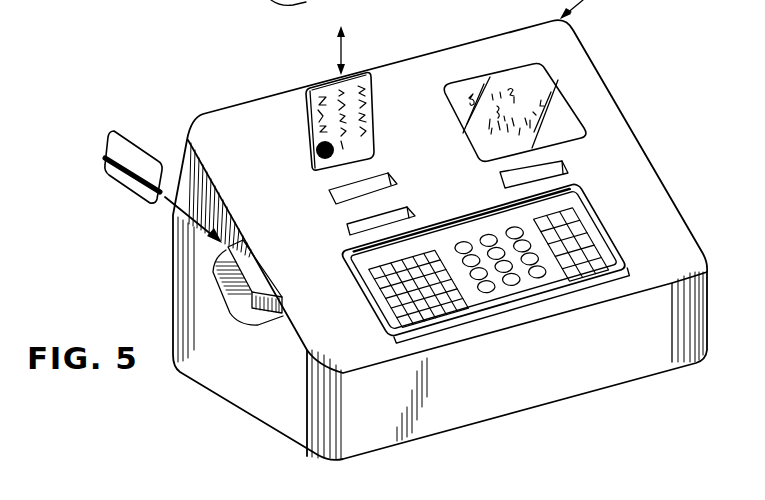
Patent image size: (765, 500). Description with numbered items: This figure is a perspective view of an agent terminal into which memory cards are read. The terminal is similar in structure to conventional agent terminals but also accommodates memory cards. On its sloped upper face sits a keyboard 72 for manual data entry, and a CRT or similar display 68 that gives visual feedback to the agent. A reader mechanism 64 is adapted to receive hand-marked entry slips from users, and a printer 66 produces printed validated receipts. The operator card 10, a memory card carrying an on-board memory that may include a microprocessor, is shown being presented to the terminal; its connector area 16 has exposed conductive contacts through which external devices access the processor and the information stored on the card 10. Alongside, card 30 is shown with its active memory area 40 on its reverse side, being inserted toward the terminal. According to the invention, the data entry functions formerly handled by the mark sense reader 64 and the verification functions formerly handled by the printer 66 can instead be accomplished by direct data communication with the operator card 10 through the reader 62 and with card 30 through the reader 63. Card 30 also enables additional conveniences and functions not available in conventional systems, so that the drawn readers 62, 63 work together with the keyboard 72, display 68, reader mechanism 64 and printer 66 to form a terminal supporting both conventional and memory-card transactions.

The operator card 10 is at (355, 86).
The connector area 16 is at (316, 152).
The card 30 is at (117, 140).
The active memory area 40 is at (107, 157).
The reader 62 is at (337, 193).
The reader 63 is at (260, 323).
The reader mechanism 64 is at (400, 214).
The printer 66 is at (552, 172).
The display 68 is at (545, 97).
The keyboard 72 is at (622, 242).